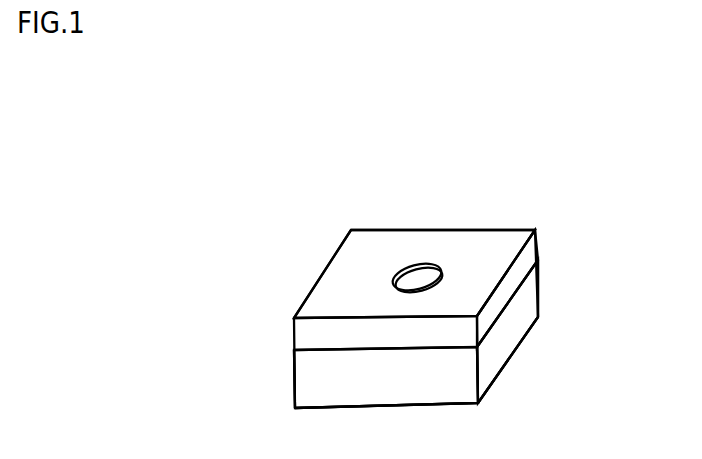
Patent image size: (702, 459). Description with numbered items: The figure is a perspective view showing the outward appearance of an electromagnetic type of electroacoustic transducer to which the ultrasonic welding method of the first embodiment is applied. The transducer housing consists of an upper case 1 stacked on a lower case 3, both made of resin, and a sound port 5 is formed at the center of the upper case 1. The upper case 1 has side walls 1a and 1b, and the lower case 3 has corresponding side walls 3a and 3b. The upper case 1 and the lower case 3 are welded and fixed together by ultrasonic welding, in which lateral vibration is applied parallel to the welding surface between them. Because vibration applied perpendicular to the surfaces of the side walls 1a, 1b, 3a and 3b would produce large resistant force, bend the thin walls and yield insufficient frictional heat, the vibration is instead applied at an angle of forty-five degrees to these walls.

The upper case 1 is at (520, 228).
The side wall of the upper case 1a is at (317, 283).
The side wall of the upper case 1b is at (527, 262).
The lower case 3 is at (507, 352).
The side wall of the lower case 3a is at (295, 375).
The side wall of the lower case 3b is at (530, 317).
The sound port 5 is at (414, 260).